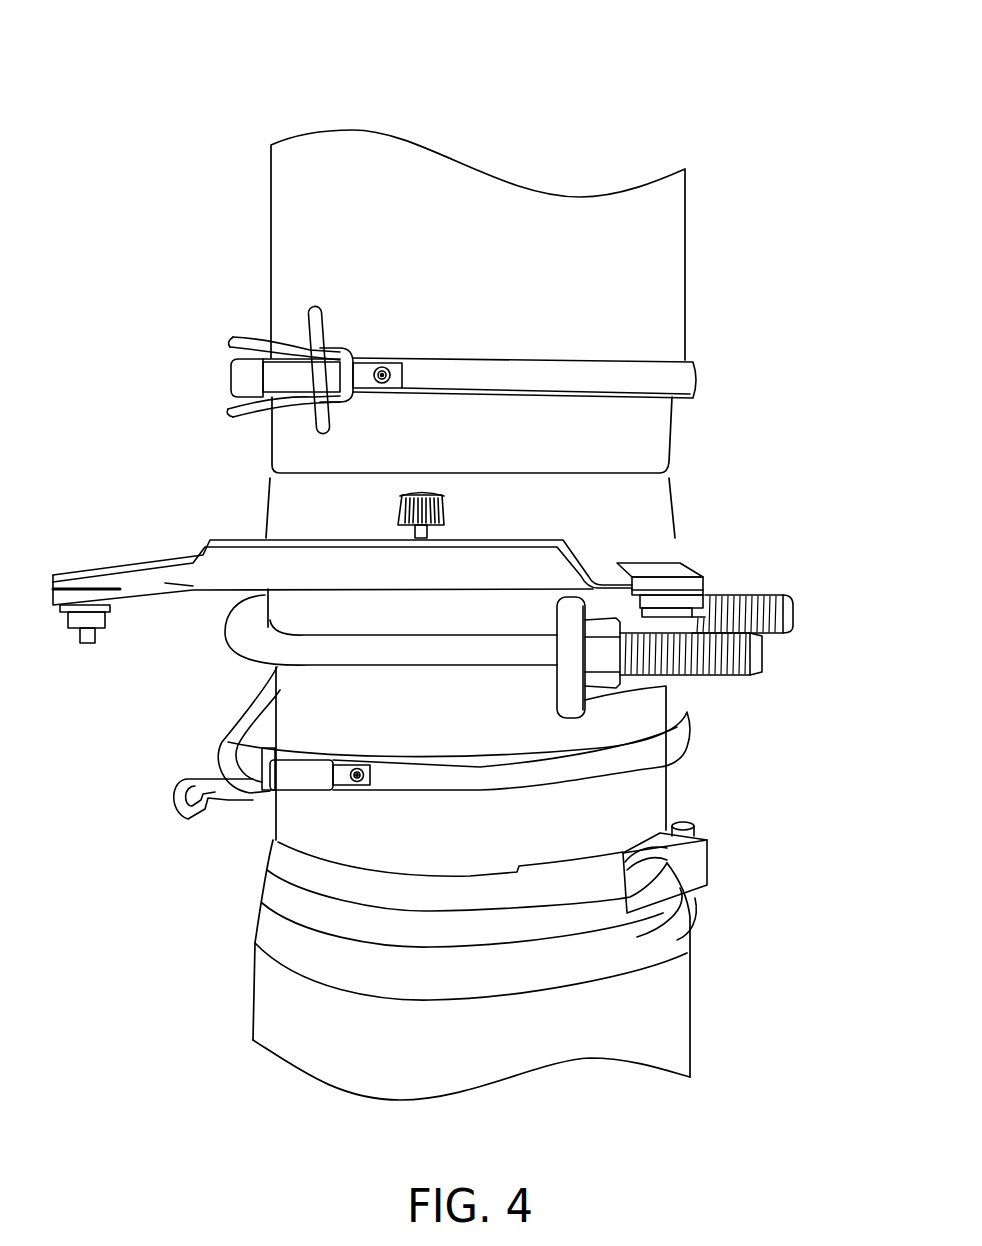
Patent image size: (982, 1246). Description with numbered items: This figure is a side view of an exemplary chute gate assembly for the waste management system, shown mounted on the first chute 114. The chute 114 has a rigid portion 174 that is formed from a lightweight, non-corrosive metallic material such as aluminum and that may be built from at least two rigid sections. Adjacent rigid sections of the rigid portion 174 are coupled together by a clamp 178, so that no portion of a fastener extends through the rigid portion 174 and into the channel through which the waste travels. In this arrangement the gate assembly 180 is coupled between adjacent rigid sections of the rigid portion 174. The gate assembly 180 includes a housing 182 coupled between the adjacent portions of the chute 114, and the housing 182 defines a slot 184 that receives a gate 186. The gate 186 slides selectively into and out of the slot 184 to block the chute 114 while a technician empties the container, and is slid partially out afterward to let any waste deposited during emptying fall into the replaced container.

The first chute 114 is at (282, 103).
The rigid portion 174 is at (638, 232).
The clamp 178 is at (248, 372).
The gate assembly 180 is at (124, 520).
The housing 182 is at (672, 568).
The slot 184 is at (645, 592).
The gate 186 is at (230, 567).